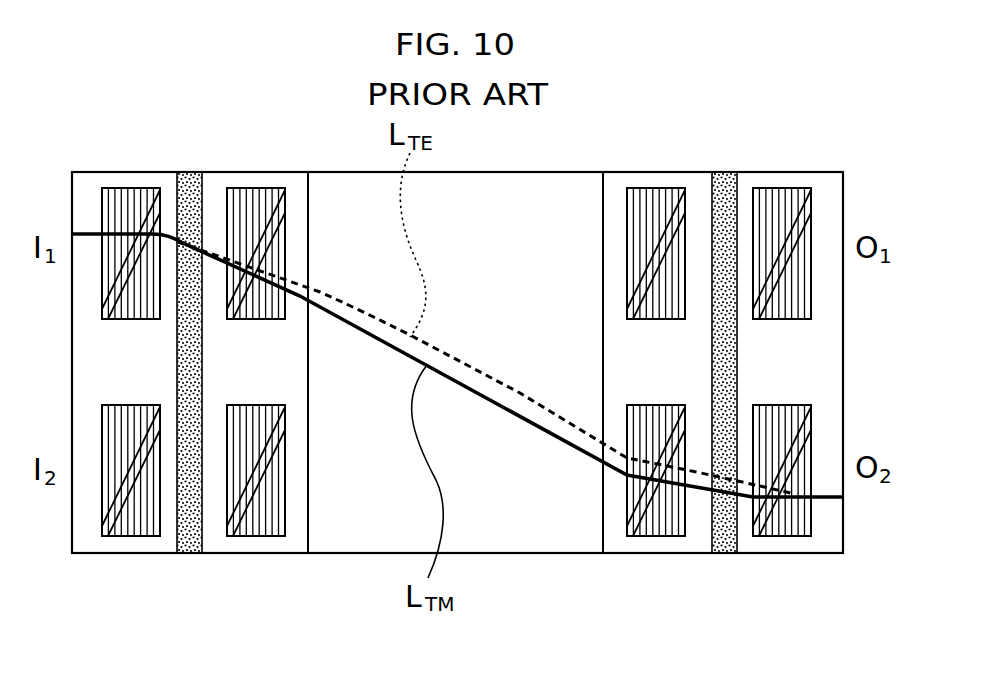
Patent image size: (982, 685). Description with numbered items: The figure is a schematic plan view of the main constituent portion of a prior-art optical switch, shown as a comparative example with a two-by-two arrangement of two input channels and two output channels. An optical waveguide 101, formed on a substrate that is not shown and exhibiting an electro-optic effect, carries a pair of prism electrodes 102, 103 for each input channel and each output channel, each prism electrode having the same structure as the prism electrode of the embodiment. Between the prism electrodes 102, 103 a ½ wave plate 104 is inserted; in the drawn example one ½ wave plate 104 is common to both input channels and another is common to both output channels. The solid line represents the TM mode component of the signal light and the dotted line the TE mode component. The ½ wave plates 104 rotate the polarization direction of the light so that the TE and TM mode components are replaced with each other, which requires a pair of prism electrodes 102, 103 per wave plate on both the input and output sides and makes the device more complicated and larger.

The optical waveguide 101 is at (527, 187).
The prism electrode 102 is at (131, 537).
The prism electrode 103 is at (257, 537).
The ½ wave plate 104 is at (193, 179).